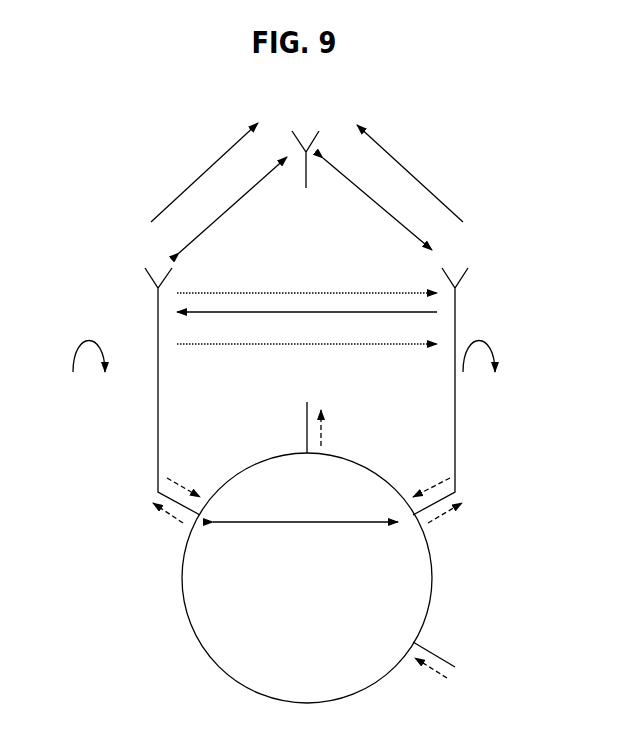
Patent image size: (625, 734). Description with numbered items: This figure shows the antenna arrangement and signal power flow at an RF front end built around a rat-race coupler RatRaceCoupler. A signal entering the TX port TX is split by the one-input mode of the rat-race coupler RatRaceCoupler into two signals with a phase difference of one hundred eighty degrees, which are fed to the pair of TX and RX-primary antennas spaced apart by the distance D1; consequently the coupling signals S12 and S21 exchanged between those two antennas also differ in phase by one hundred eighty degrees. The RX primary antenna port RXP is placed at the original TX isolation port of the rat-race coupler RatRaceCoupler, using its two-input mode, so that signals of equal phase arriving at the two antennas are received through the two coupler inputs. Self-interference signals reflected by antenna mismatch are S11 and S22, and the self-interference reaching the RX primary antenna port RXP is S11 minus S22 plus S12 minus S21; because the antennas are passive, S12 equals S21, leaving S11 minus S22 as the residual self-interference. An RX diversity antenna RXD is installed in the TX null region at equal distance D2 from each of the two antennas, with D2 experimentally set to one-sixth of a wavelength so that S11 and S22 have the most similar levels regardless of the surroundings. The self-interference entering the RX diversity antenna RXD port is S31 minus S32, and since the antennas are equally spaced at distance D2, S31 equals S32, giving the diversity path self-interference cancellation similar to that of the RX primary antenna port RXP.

The RX diversity antenna RXD is at (306, 141).
The RX primary antenna port RXP is at (352, 415).
The TX port TX is at (449, 663).
The self-interference signal S11 is at (107, 358).
The self-interference signal S22 is at (498, 358).
The coupling signal S12 is at (307, 324).
The coupling signal S21 is at (307, 355).
The coupling signal S31 is at (204, 172).
The coupling signal S32 is at (410, 173).
The distance D1 is at (307, 280).
The distance D2 is at (305, 205).
The rat-race coupler RatRaceCoupler is at (307, 578).